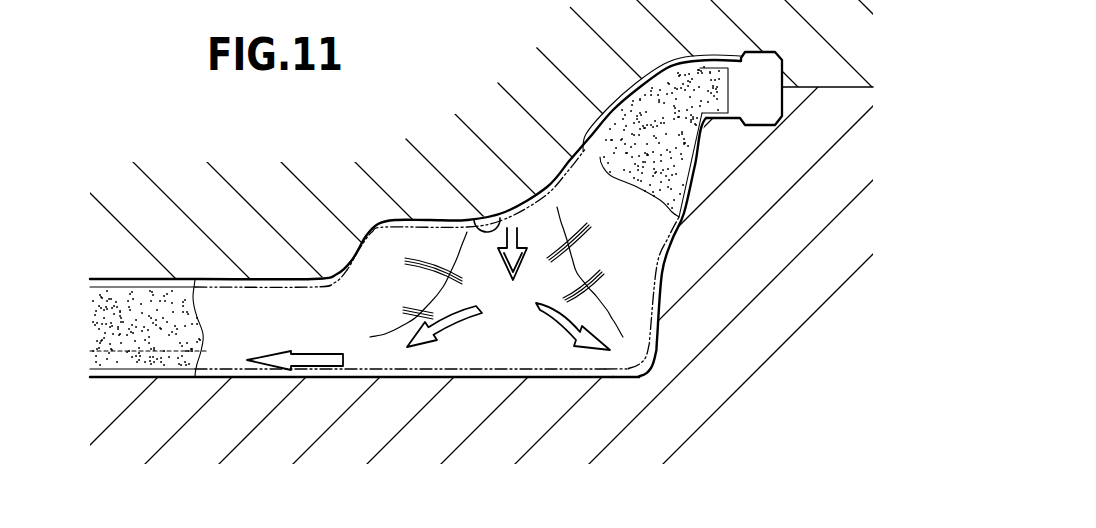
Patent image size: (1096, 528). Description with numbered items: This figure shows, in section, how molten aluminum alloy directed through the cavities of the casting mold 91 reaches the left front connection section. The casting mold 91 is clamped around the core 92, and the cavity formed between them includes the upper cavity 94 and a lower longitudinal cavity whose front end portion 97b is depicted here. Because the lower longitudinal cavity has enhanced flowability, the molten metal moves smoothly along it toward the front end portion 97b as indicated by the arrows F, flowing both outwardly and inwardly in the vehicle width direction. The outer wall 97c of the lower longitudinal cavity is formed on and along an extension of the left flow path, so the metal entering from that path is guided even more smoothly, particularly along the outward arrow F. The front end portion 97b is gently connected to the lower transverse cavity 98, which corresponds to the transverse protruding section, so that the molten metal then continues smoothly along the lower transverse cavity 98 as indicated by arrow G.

The casting mold 91 is at (440, 142).
The core 92 is at (675, 148).
The upper cavity 94 is at (500, 220).
The front end portion 97b is at (493, 344).
The outer wall 97c is at (637, 354).
The lower transverse cavity 98 is at (215, 361).
The arrow F is at (460, 317).
The arrow G is at (310, 357).